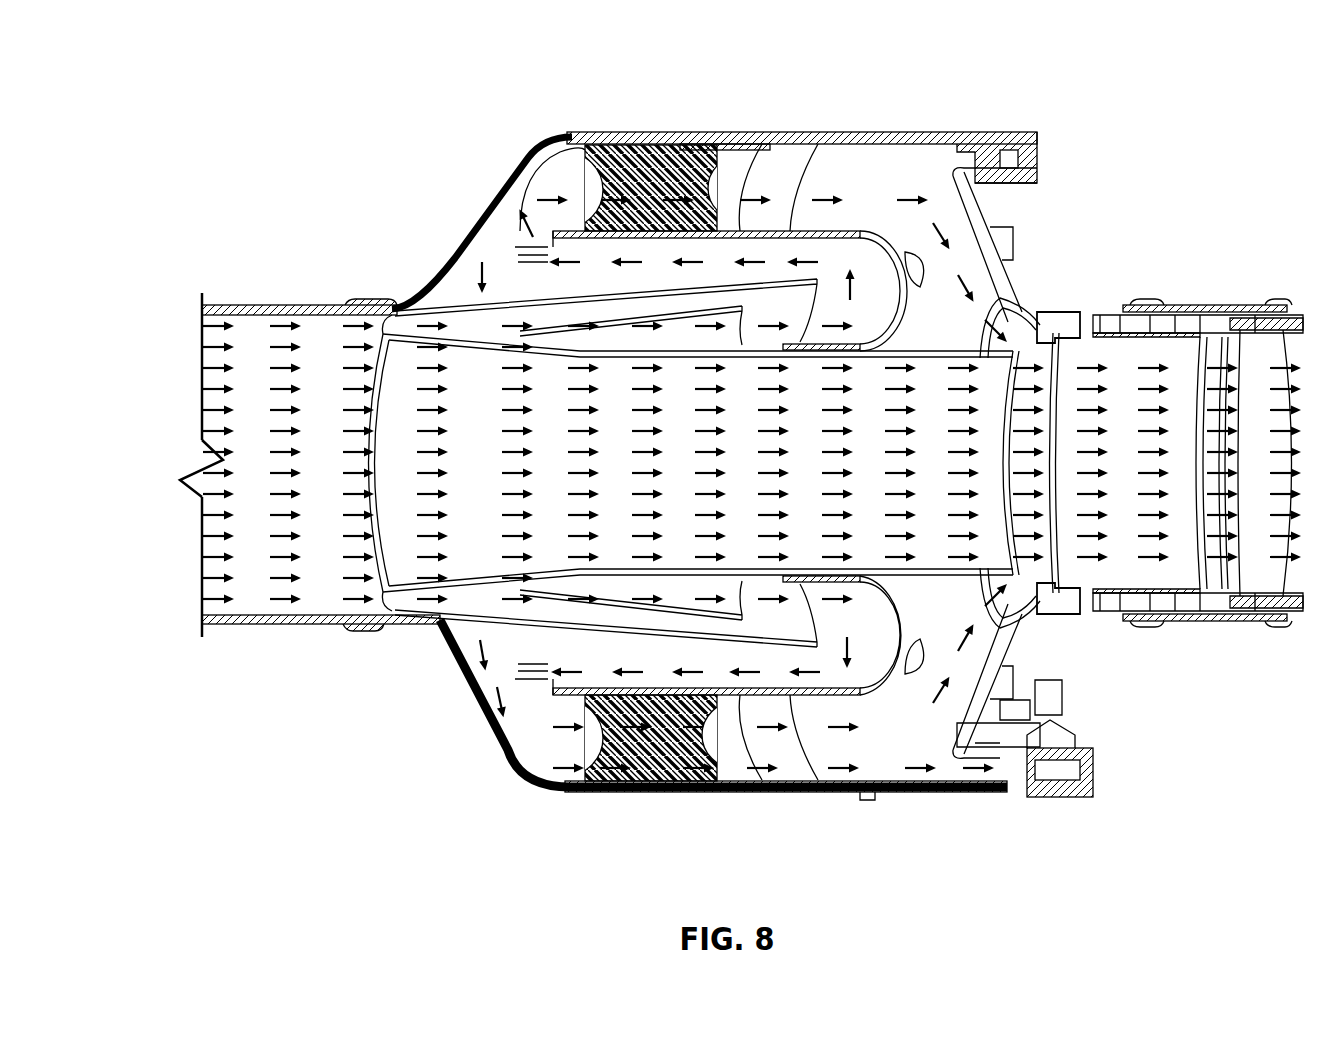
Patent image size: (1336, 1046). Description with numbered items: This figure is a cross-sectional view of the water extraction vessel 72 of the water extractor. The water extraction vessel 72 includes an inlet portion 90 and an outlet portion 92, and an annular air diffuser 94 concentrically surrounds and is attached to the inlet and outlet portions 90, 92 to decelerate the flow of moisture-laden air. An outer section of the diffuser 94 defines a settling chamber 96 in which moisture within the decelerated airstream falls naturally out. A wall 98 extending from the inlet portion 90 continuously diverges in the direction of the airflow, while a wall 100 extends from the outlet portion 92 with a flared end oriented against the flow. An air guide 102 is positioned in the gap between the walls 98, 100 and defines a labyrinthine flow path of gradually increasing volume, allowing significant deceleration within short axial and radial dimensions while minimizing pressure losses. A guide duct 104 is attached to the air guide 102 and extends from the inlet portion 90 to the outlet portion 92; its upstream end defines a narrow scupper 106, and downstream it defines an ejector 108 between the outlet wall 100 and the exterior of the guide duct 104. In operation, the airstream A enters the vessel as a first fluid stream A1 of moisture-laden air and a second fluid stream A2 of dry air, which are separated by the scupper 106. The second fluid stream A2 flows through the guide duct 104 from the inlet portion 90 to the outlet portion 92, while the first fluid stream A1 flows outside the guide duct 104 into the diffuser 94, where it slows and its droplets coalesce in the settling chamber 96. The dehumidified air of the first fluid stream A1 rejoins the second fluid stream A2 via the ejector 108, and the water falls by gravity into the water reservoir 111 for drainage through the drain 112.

The water extraction vessel 72 is at (316, 138).
The inlet portion 90 is at (358, 300).
The outlet portion 92 is at (1145, 305).
The annular air diffuser 94 is at (750, 145).
The settling chamber 96 is at (567, 172).
The wall 98 is at (677, 200).
The wall 100 is at (1007, 313).
The air guide 102 is at (858, 148).
The guide duct 104 is at (722, 645).
The scupper 106 is at (470, 300).
The ejector 108 is at (1045, 320).
The water reservoir 111 is at (840, 790).
The drain 112 is at (1025, 785).
The airstream A is at (150, 480).
The first fluid stream A1 is at (519, 305).
The second fluid stream A2 is at (590, 475).